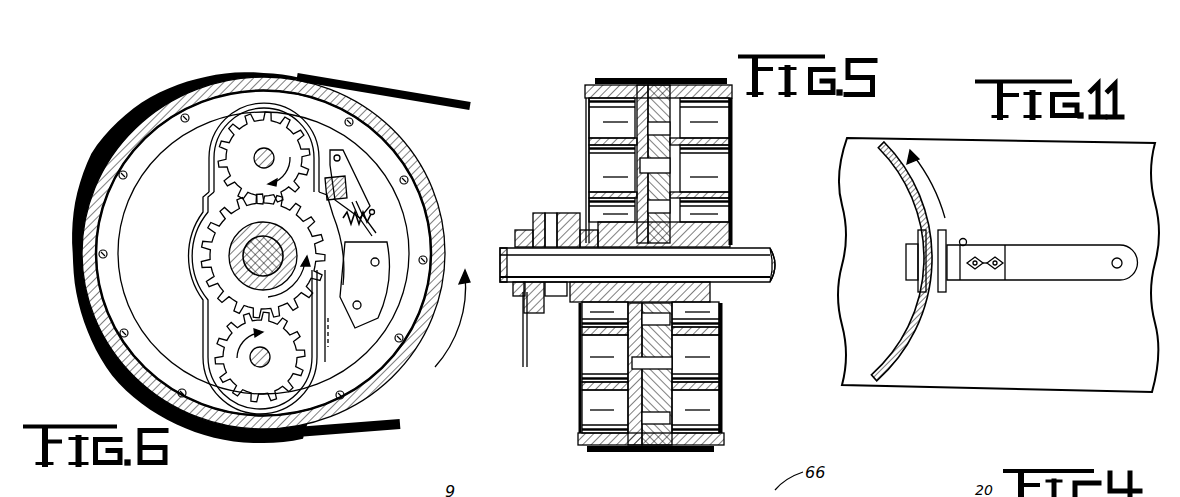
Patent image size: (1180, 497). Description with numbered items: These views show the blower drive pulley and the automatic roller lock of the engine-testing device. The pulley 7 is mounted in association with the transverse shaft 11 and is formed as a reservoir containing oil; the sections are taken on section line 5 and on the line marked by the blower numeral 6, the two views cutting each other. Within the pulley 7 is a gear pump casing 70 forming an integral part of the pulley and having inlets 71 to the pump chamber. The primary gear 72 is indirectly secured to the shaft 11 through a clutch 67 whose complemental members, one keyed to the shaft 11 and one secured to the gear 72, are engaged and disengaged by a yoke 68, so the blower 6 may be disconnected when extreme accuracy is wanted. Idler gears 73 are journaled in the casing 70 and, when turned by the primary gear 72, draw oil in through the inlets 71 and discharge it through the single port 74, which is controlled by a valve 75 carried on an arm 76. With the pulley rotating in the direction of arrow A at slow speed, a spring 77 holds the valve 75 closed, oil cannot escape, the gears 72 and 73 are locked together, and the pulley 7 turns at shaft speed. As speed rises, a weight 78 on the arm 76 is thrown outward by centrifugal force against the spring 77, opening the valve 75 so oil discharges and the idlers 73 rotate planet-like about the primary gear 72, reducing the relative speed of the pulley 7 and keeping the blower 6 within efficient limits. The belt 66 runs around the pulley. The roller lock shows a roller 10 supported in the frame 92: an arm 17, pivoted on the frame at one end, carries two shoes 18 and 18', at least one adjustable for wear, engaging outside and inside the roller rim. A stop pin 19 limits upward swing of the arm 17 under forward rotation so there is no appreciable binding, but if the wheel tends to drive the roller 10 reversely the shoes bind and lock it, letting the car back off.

In FIG. 6, the section line 5— 5 is at (245, 55).
In FIG. 5, the blower 6 is at (630, 63).
In FIG. 6, the pulley 7 is at (395, 383).
In FIG. 5, the pulley 7 is at (722, 433).
In FIG. 5, the roller 10 is at (673, 215).
In FIG. 11, the roller 10 is at (912, 340).
In FIG. 6, the transverse shaft 11 is at (270, 243).
In FIG. 5, the transverse shaft 11 is at (757, 288).
In FIG. 11, the arm 17 is at (1060, 254).
In FIG. 11, the shoe 18 is at (955, 275).
In FIG. 11, the shoe 18' is at (894, 273).
In FIG. 11, the stop pin 19 is at (966, 239).
In FIG. 6, the belt 66 is at (398, 428).
In FIG. 5, the belt 66 is at (690, 455).
In FIG. 5, the clutch 67 is at (562, 213).
In FIG. 5, the yoke 68 is at (527, 353).
In FIG. 6, the gear pump casing 70 is at (195, 236).
In FIG. 6, the inlets 71 is at (209, 195).
In FIG. 6, the primary gear 72 is at (226, 258).
In FIG. 5, the primary gear 72 is at (710, 242).
In FIG. 6, the idler gears 73 is at (289, 370).
In FIG. 5, the idler gears 73 is at (657, 188).
In FIG. 6, the port 74 is at (375, 210).
In FIG. 6, the valve 75 is at (338, 186).
In FIG. 6, the arm 76 is at (370, 198).
In FIG. 6, the spring 77 is at (360, 238).
In FIG. 6, the weight 78 is at (372, 318).
In FIG. 11, the frame 92 is at (1132, 175).
In FIG. 6, the arrow A is at (459, 327).